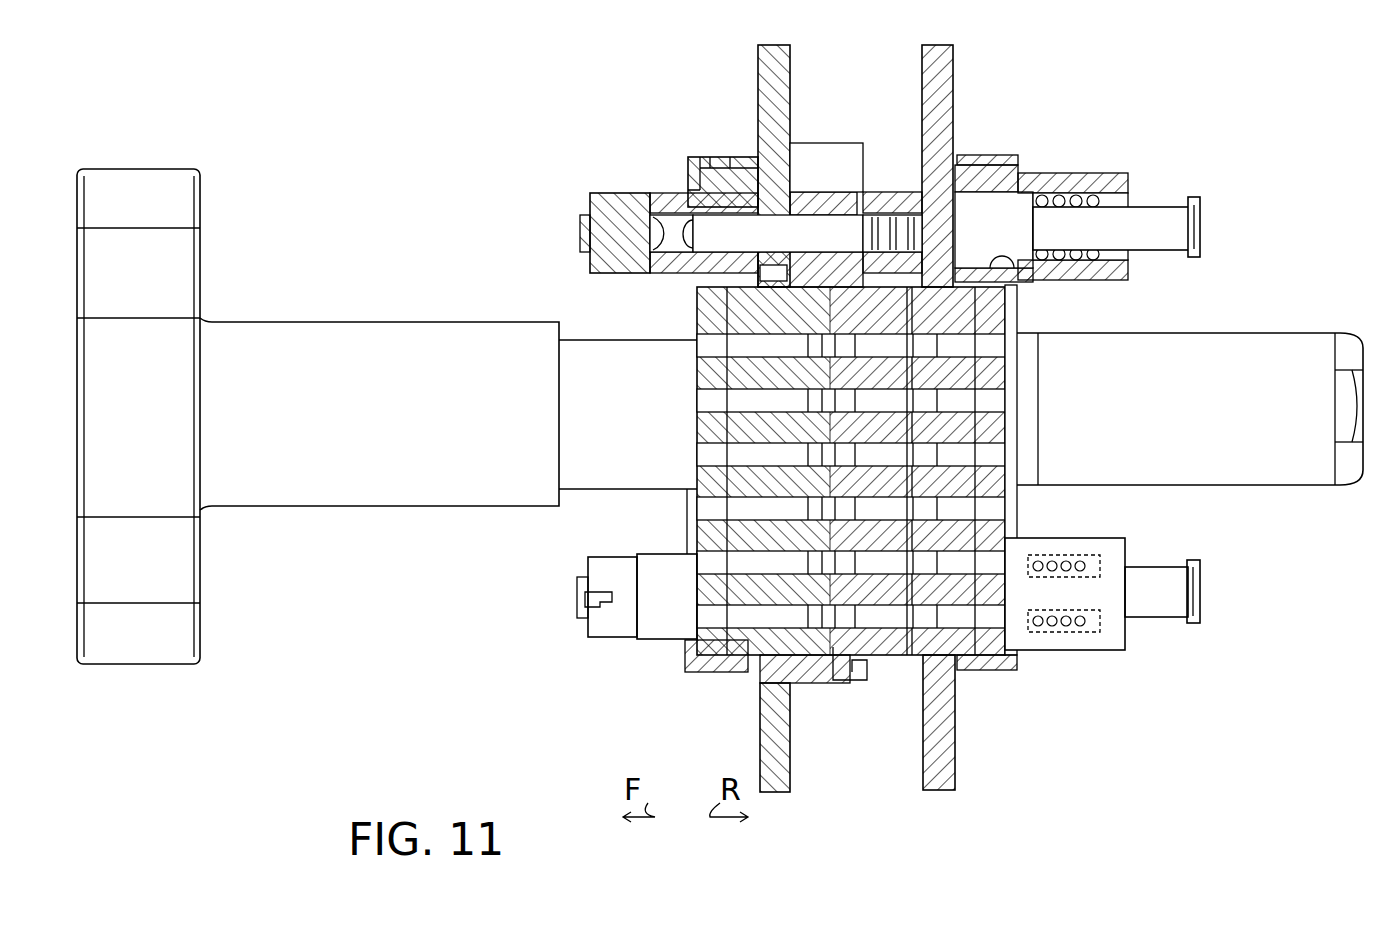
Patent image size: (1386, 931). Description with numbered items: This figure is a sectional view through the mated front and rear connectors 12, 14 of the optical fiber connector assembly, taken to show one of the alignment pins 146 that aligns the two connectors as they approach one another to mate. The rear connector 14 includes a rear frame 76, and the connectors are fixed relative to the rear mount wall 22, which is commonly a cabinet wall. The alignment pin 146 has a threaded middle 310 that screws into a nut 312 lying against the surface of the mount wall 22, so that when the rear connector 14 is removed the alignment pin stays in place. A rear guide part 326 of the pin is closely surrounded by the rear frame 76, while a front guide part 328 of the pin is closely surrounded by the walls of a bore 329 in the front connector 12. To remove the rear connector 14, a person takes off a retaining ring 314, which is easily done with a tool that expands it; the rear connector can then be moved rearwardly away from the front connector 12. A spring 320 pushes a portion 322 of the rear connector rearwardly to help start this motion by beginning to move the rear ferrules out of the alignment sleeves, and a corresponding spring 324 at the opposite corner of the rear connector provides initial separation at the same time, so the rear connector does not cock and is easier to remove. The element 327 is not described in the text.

The front connector 12 is at (682, 650).
The rear connector 14 is at (1025, 662).
The rear mount wall 22 is at (758, 62).
The rear frame 76 is at (988, 178).
The alignment pin 146 is at (723, 227).
The threaded middle 310 is at (910, 207).
The nut 312 is at (882, 187).
The retaining ring 314 is at (1193, 257).
The spring 320 is at (1093, 190).
The portion of the rear connector 322 is at (1132, 185).
The spring 324 is at (1073, 558).
The rear guide part 326 is at (1005, 210).
The detent 327 is at (1012, 270).
The front guide part 328 is at (700, 187).
The bore 329 is at (682, 262).